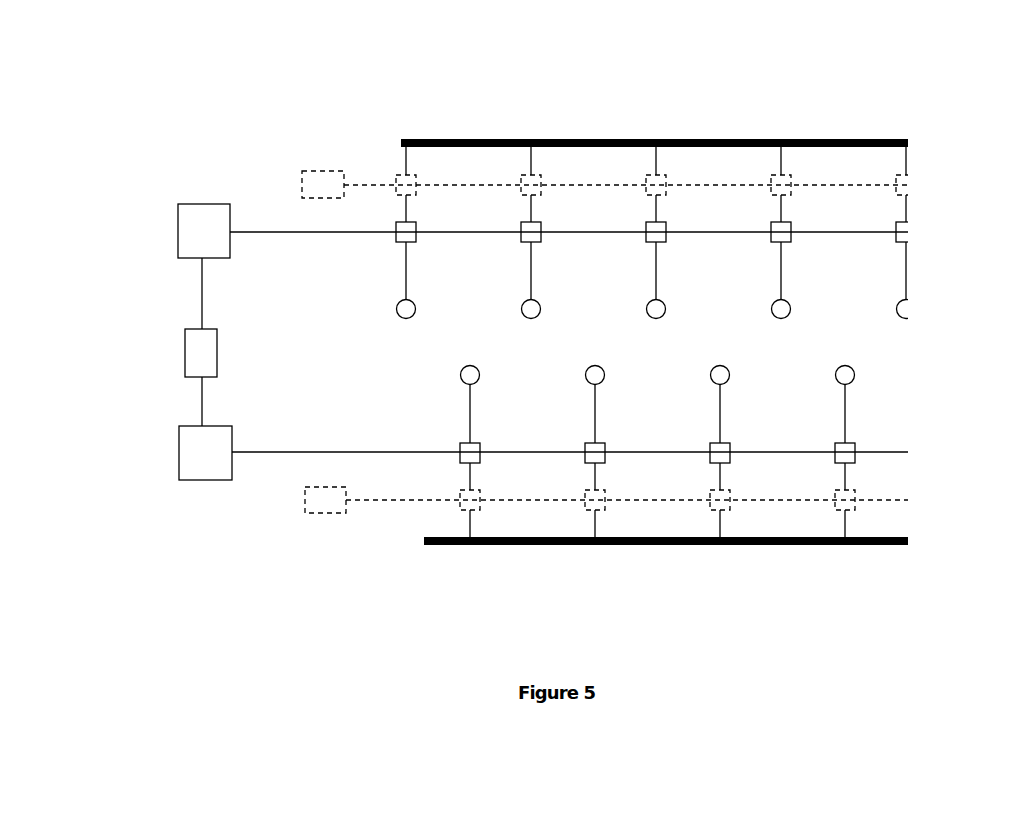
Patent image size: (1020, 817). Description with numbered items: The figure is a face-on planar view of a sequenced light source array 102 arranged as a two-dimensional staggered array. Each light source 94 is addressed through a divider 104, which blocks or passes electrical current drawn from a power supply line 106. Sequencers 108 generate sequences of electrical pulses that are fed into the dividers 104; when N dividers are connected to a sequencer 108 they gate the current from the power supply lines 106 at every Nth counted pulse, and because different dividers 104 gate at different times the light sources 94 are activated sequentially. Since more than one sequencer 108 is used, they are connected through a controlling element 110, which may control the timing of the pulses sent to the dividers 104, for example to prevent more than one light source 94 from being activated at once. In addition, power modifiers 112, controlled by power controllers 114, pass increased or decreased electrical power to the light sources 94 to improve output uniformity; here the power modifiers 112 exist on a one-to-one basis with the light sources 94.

The sequenced light source array 102 is at (122, 73).
The light source 94 is at (400, 310).
The divider 104 is at (523, 240).
The power supply line 106 is at (613, 140).
The sequencer 108 is at (187, 230).
The controlling element 110 is at (195, 368).
The power modifier 112 is at (408, 185).
The power controller 114 is at (322, 178).